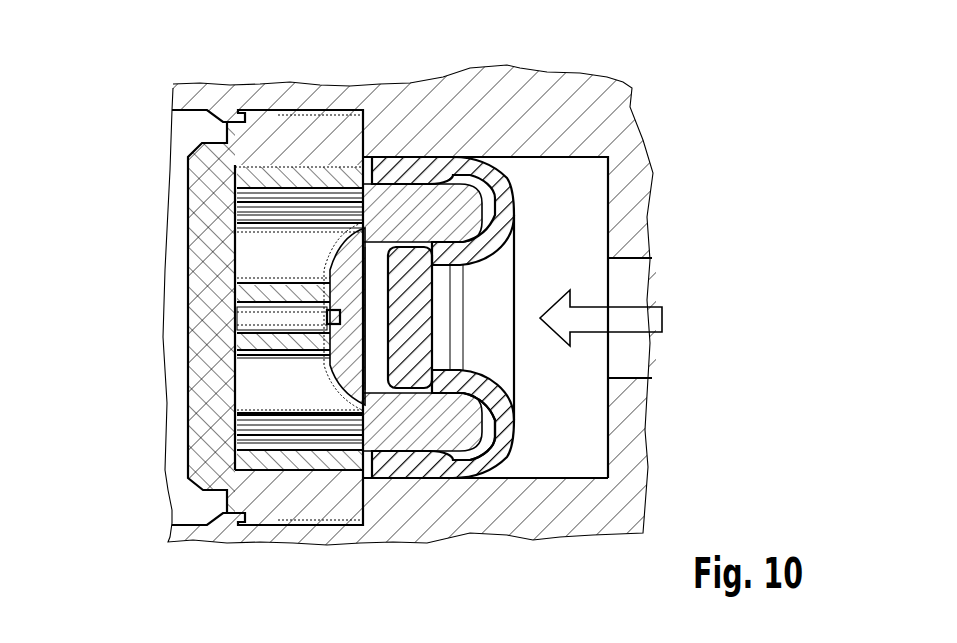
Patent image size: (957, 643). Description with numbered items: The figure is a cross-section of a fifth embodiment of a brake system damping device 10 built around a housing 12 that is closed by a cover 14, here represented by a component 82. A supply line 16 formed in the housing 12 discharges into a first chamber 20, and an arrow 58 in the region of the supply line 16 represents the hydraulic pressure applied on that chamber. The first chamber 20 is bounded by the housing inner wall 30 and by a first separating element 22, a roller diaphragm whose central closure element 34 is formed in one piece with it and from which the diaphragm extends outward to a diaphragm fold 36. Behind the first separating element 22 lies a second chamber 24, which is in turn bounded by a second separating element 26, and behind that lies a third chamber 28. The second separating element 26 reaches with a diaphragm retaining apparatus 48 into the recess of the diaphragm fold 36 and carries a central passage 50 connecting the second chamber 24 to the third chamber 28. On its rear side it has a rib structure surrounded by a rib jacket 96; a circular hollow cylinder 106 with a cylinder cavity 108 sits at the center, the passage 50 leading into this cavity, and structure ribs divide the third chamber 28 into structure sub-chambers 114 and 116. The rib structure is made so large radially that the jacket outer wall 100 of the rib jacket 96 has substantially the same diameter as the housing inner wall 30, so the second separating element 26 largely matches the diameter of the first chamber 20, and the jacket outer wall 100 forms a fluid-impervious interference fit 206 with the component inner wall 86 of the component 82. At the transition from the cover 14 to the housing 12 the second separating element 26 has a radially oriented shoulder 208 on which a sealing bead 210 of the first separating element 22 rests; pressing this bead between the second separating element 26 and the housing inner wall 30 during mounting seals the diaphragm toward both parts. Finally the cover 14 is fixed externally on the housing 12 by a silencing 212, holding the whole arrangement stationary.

The brake system damping device 10 is at (668, 70).
The housing 12 is at (613, 125).
The cover 14 is at (200, 295).
The supply line 16 is at (647, 272).
The first chamber 20 is at (570, 448).
The first separating element 22 is at (455, 160).
The second chamber 24 is at (373, 285).
The second separating element 26 is at (293, 400).
The third chamber 28 is at (255, 258).
The housing inner wall 30 is at (545, 467).
The closure element 34 is at (403, 345).
The diaphragm fold 36 is at (518, 235).
The diaphragm retaining apparatus 48 is at (445, 452).
The passage 50 is at (300, 318).
The arrow 58 is at (662, 320).
The component 82 is at (204, 377).
The component inner wall 86 is at (290, 180).
The rib jacket 96 is at (298, 472).
The jacket outer wall 100 is at (303, 465).
The circular hollow cylinder 106 is at (255, 352).
The cylinder cavity 108 is at (257, 318).
The structure sub-chamber 114 is at (268, 248).
The structure sub-chamber 116 is at (266, 383).
The interference fit 206 is at (327, 163).
The shoulder 208 is at (368, 475).
The sealing bead 210 is at (410, 170).
The silencing 212 is at (229, 95).